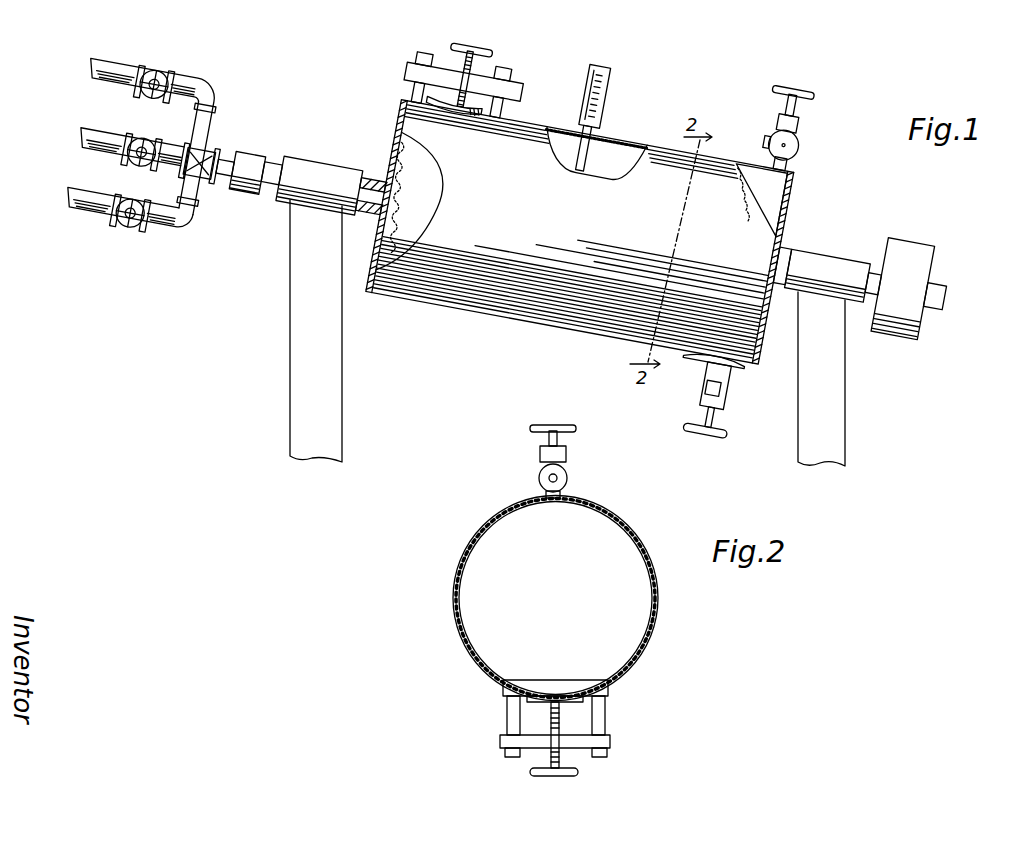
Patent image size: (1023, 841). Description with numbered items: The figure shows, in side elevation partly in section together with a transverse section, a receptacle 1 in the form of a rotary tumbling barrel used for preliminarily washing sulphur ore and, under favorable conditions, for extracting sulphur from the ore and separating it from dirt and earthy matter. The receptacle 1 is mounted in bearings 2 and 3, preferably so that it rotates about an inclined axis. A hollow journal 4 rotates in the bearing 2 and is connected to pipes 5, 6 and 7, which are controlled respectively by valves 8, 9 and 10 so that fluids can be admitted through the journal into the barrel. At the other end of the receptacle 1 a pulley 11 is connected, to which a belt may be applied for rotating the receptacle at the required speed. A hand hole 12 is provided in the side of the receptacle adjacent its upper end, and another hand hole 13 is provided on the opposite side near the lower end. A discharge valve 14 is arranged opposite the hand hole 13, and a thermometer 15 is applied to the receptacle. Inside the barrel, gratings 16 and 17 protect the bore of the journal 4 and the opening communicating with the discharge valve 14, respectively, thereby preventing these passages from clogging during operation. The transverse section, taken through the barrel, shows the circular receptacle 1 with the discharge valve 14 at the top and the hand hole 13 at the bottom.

In FIG. 1, the receptacle 1 is at (500, 318).
In FIG. 2, the receptacle 1 is at (647, 654).
In FIG. 1, the bearing 2 is at (314, 158).
In FIG. 1, the bearing 3 is at (830, 244).
In FIG. 1, the journal 4 is at (378, 172).
In FIG. 1, the pipe 5 is at (118, 66).
In FIG. 1, the pipe 6 is at (115, 135).
In FIG. 1, the pipe 7 is at (105, 200).
In FIG. 1, the valve 8 is at (162, 72).
In FIG. 1, the valve 9 is at (157, 140).
In FIG. 1, the valve 10 is at (132, 234).
In FIG. 1, the pulley 11 is at (930, 242).
In FIG. 1, the hand hole 12 is at (476, 76).
In FIG. 1, the hand hole 13 is at (736, 372).
In FIG. 2, the hand hole 13 is at (588, 700).
In FIG. 1, the discharge valve 14 is at (800, 148).
In FIG. 2, the discharge valve 14 is at (568, 474).
In FIG. 1, the thermometer 15 is at (606, 108).
In FIG. 1, the grating 16 is at (424, 190).
In FIG. 1, the grating 17 is at (762, 196).